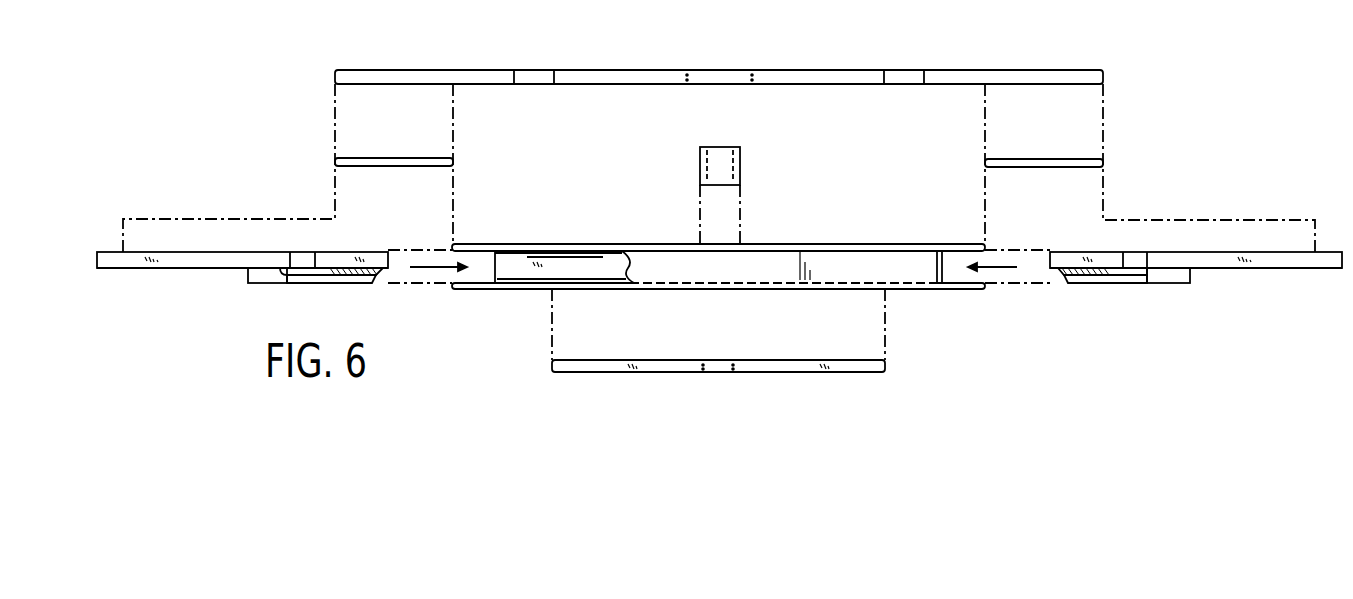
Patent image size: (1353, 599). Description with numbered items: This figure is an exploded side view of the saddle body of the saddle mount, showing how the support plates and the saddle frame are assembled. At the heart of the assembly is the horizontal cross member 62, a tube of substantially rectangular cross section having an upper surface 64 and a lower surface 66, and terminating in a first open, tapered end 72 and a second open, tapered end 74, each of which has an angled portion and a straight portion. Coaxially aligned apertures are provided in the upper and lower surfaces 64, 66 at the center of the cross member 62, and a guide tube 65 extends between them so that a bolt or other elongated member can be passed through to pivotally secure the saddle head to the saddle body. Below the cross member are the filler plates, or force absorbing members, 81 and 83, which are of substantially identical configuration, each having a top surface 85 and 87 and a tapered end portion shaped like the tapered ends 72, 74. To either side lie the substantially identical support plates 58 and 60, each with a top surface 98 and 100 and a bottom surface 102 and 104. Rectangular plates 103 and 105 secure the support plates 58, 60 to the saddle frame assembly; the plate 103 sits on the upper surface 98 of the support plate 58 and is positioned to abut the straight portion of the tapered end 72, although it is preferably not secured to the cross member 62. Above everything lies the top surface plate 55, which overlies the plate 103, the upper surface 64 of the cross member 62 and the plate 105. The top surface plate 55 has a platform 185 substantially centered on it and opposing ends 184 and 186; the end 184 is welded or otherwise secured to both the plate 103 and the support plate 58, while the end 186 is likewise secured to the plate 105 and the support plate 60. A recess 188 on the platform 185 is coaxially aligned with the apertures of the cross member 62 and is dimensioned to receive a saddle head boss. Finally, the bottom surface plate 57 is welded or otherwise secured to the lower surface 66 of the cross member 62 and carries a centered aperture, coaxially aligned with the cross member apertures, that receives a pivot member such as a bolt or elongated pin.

The top surface plate 55 is at (827, 70).
The bottom surface plate 57 is at (782, 372).
The support plate 58 is at (113, 250).
The support plate 60 is at (1327, 252).
The horizontal cross member 62 is at (483, 293).
The upper surface 64 is at (640, 245).
The guide tube 65 is at (740, 160).
The lower surface 66 is at (535, 291).
The first open, tapered end 72 is at (449, 279).
The second open, tapered end 74 is at (990, 278).
The filler plate/force absorbing member 81 is at (268, 283).
The filler plate/force absorbing member 83 is at (1167, 283).
The top surface 85 is at (280, 272).
The top surface 87 is at (1183, 283).
The top surface 98 is at (168, 252).
The top surface 100 is at (1262, 252).
The bottom surface 102 is at (172, 268).
The rectangular plate 103 is at (353, 158).
The bottom surface 104 is at (1267, 268).
The rectangular plate 105 is at (1095, 159).
The end 184 is at (335, 71).
The platform 185 is at (663, 70).
The end 186 is at (1103, 73).
The recess 188 is at (727, 72).